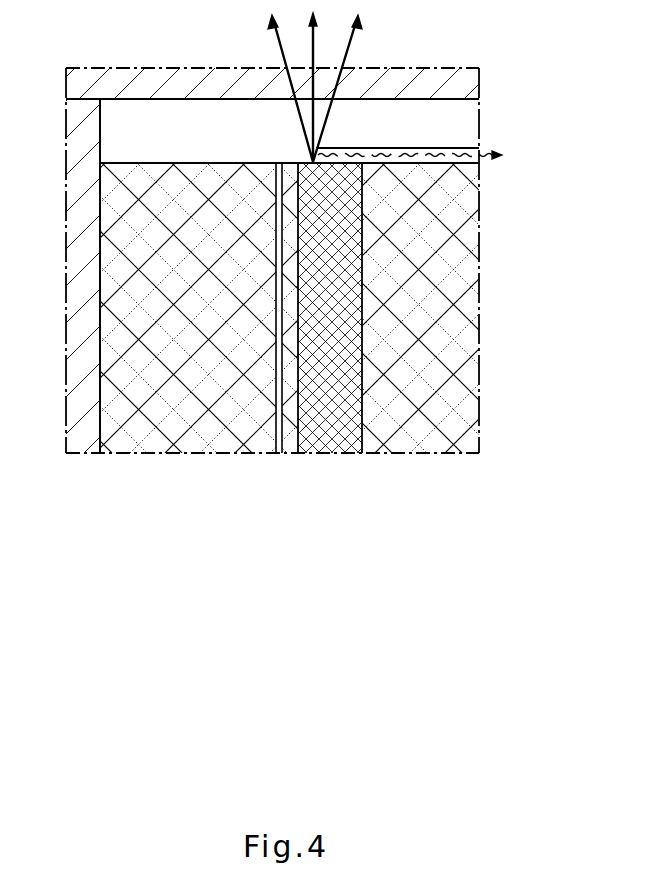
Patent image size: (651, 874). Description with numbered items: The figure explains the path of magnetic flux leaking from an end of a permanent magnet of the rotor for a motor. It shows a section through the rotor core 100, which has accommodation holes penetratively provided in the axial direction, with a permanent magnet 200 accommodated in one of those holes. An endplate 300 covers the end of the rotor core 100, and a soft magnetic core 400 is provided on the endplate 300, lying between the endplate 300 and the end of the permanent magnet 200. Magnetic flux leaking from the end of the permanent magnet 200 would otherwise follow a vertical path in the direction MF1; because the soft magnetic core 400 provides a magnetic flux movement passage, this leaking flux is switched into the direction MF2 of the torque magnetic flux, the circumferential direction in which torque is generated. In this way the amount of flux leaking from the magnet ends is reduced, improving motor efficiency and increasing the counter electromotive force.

The rotor core 100 is at (460, 268).
The permanent magnet 200 is at (333, 328).
The endplate 300 is at (397, 120).
The soft magnetic core 400 is at (478, 142).
The direction of leaking magnetic flux path MF1 is at (276, 53).
The direction of torque magnetic flux MF2 is at (441, 160).